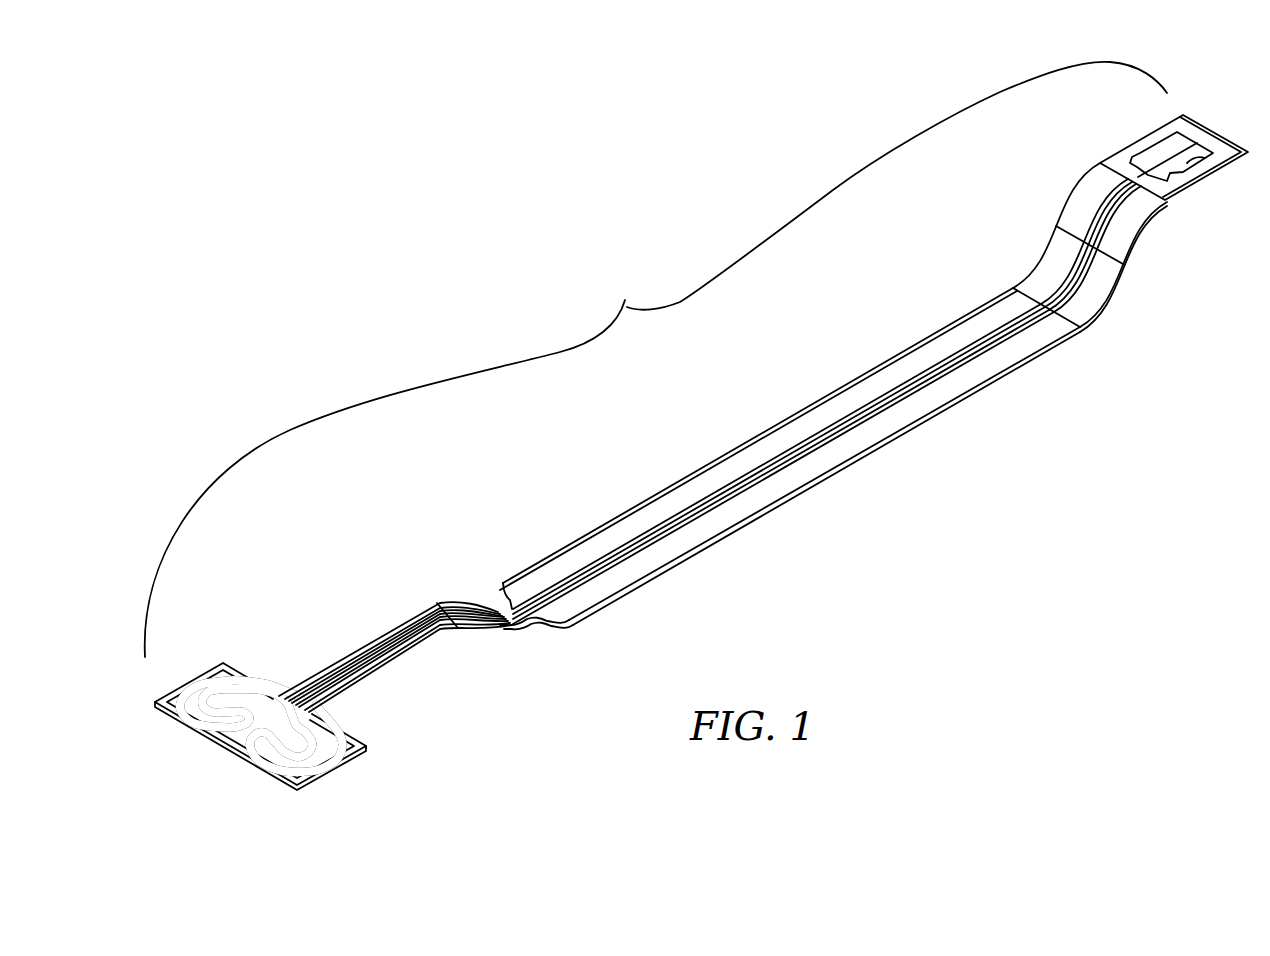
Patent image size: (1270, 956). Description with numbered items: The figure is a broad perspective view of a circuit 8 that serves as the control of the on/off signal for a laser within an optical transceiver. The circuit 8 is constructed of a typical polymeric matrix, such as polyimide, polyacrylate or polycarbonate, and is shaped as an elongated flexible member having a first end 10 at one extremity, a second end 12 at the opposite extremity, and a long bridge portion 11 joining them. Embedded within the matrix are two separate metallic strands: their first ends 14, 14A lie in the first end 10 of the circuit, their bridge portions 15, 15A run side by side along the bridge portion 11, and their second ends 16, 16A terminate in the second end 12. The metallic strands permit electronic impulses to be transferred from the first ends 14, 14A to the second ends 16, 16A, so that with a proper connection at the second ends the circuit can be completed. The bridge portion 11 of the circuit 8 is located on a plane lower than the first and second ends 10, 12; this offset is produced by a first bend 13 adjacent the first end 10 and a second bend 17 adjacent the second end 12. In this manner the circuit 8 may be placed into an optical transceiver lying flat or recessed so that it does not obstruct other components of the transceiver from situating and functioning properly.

The circuit 8 is at (656, 359).
The first end 10 is at (302, 787).
The bridge portion 11 is at (638, 582).
The second end 12 is at (1161, 199).
The first bend 13 is at (457, 600).
The first end of metallic strand 14 is at (234, 688).
The first end of metallic strand 14A is at (367, 745).
The bridge portion of metallic strand 15 is at (727, 480).
The bridge portion of metallic strand 15A is at (783, 465).
The second end of metallic strand 16 is at (1157, 152).
The second end of metallic strand 16A is at (1210, 155).
The second bend 17 is at (1056, 226).